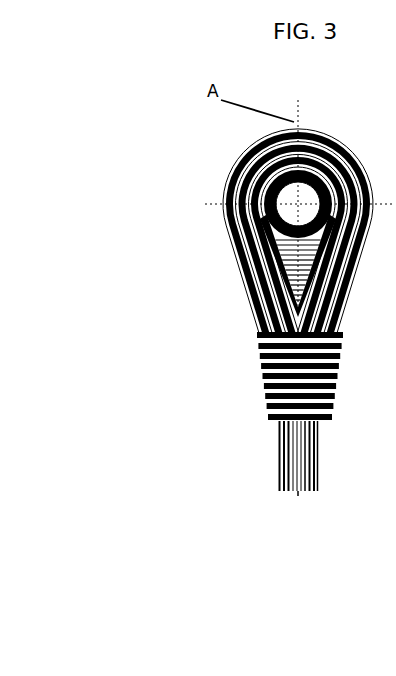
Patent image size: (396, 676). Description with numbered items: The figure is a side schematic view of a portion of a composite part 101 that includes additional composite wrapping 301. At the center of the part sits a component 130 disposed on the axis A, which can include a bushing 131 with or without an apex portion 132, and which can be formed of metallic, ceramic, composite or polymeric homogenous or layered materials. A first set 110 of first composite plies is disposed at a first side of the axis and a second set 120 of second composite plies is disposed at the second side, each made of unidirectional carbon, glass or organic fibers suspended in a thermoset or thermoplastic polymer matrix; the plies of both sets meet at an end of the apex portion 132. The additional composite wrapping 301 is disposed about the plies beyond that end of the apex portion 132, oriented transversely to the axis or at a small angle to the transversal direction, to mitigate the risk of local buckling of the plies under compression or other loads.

The composite part 101 is at (232, 158).
The bushing 131 is at (315, 183).
The component 130 is at (277, 215).
The apex portion 132 is at (285, 263).
The additional composite wrapping 301 is at (265, 381).
The second set of second composite plies 120 is at (290, 477).
The first set of first composite plies 110 is at (313, 465).